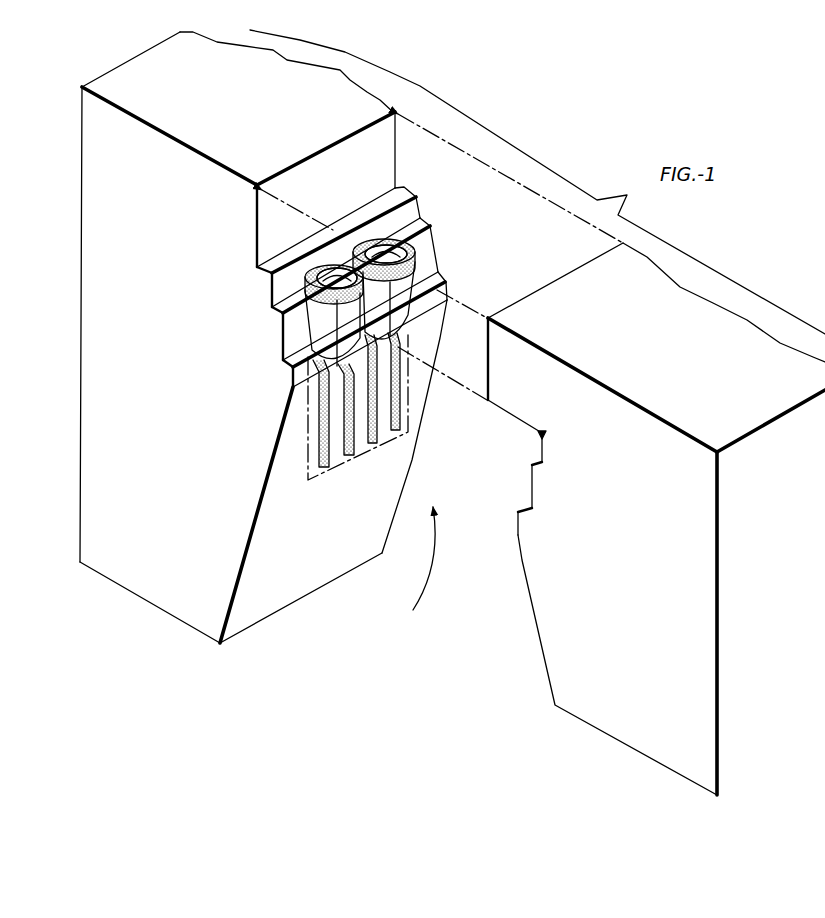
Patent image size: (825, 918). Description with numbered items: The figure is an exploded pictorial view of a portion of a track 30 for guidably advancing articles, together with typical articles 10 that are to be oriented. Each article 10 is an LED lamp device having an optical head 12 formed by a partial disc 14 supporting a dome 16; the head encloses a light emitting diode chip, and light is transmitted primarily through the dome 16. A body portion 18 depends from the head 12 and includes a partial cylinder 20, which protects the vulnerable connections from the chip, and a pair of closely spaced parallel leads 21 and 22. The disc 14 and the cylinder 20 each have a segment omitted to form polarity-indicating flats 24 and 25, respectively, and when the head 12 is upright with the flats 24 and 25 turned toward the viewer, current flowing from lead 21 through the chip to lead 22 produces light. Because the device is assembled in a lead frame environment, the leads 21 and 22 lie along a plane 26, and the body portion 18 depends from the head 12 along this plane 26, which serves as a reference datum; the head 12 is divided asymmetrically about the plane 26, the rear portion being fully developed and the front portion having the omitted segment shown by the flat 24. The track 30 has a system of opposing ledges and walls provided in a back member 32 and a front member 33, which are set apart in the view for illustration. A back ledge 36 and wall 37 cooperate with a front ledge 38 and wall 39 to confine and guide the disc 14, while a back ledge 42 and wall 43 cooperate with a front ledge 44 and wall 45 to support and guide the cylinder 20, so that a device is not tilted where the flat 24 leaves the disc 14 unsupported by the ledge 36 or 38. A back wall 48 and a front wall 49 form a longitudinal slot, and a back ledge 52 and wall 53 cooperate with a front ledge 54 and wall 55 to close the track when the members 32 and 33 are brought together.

The article 10 is at (319, 336).
The optical head 12 is at (293, 302).
The partial disc 14 is at (345, 268).
The dome 16 is at (336, 266).
The body portion 18 is at (322, 372).
The partial cylinder 20 is at (316, 364).
The lead 21 is at (318, 458).
The lead 22 is at (347, 452).
The flat 24 is at (330, 322).
The flat 25 is at (323, 347).
The plane 26 is at (308, 482).
The track 30 is at (418, 574).
The back member 32 is at (160, 108).
The front member 33 is at (705, 430).
The back ledge 36 is at (420, 228).
The back wall 37 is at (408, 213).
The front ledge 38 is at (538, 460).
The front wall 39 is at (545, 440).
The back ledge 42 is at (417, 277).
The back wall 43 is at (425, 250).
The front ledge 44 is at (527, 500).
The front wall 45 is at (532, 490).
The back wall 48 is at (437, 303).
The front wall 49 is at (517, 517).
The back ledge 52 is at (395, 197).
The back wall 53 is at (380, 166).
The front ledge 54 is at (500, 413).
The front wall 55 is at (487, 350).